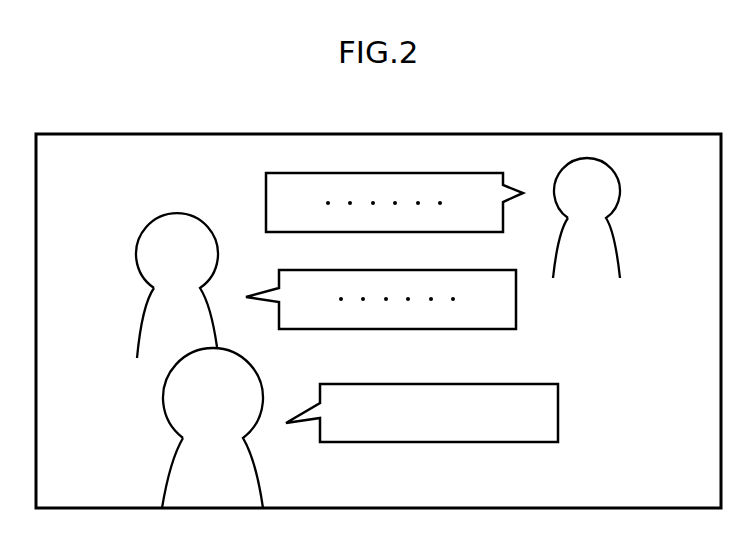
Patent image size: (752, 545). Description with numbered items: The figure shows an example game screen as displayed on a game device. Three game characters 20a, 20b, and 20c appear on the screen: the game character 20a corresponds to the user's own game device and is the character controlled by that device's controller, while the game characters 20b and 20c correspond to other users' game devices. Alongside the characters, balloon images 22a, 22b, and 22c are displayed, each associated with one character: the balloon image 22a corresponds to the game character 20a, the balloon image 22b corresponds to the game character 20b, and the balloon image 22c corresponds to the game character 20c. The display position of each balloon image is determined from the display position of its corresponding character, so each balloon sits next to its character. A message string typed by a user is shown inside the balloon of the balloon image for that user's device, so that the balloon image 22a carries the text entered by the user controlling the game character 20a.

The game character 20a is at (167, 475).
The game character 20b is at (140, 318).
The game character 20c is at (617, 248).
The balloon image 22a is at (558, 417).
The balloon image 22b is at (460, 329).
The balloon image 22c is at (267, 203).